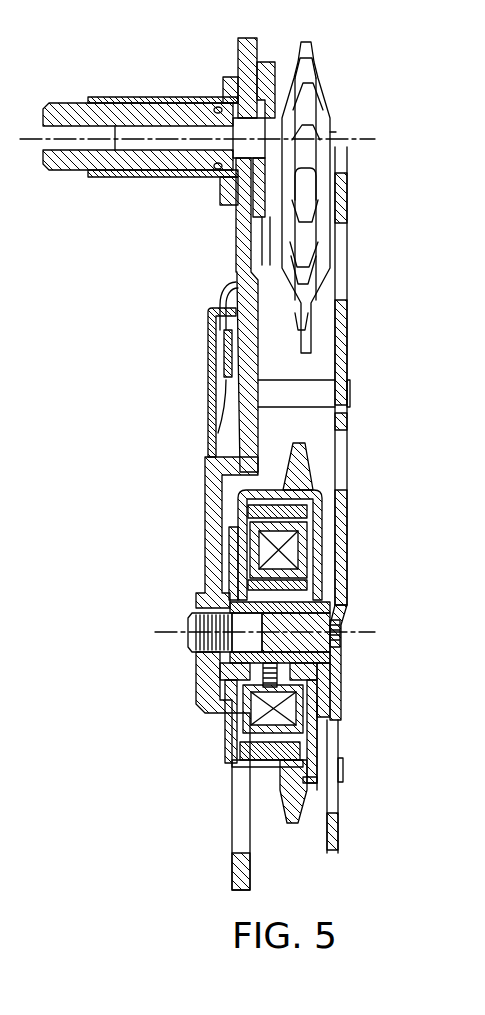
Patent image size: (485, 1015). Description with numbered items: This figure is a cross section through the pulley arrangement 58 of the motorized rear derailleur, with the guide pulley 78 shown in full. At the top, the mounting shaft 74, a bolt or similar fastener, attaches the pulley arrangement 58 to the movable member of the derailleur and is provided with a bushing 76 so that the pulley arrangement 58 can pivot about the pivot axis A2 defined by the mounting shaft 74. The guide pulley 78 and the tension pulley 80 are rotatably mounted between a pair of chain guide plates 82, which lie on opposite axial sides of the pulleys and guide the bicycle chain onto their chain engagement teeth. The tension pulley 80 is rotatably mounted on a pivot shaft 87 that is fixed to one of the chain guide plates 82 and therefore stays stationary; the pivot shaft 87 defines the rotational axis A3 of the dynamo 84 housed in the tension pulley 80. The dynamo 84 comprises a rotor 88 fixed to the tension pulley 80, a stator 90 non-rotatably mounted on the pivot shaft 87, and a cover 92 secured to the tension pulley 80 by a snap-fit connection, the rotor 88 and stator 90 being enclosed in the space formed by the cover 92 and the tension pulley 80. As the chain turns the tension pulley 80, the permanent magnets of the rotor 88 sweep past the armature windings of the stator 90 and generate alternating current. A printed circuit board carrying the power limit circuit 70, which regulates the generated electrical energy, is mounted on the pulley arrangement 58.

The pulley arrangement 58 is at (173, 572).
The power limit circuit 70 is at (215, 387).
The mounting shaft 74 is at (69, 102).
The bushing 76 is at (151, 96).
The guide pulley 78 is at (313, 50).
The tension pulley 80 is at (293, 824).
The chain guide plates 82 is at (233, 268).
The dynamo 84 is at (223, 757).
The pivot shaft 87 is at (190, 637).
The rotor 88 is at (247, 763).
The stator 90 is at (262, 550).
The cover 92 is at (228, 733).
The pivot axis A2 is at (360, 143).
The rotational axis A3 is at (362, 631).